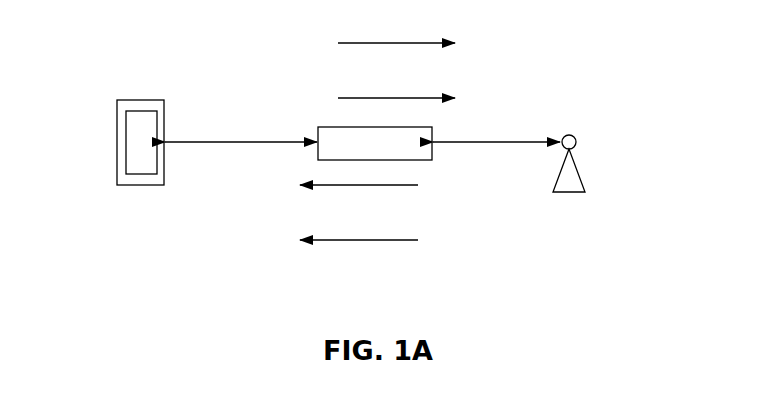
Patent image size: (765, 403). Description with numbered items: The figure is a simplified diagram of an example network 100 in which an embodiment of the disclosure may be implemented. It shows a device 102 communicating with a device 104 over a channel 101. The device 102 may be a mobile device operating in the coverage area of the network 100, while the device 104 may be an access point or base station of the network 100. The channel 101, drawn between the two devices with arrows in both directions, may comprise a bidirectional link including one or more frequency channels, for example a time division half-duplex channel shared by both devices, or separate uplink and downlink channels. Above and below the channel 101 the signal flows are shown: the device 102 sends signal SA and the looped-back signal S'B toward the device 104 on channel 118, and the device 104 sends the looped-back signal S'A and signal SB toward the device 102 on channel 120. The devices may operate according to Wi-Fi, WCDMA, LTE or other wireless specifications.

The network 100 is at (248, 38).
The channel 101 is at (432, 134).
The device 102 is at (117, 141).
The device 104 is at (580, 170).
The channel 118 is at (420, 43).
The channel 120 is at (336, 185).